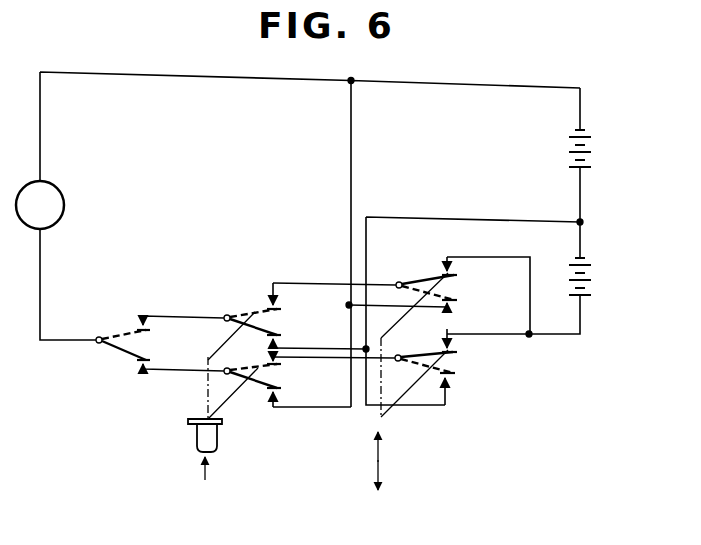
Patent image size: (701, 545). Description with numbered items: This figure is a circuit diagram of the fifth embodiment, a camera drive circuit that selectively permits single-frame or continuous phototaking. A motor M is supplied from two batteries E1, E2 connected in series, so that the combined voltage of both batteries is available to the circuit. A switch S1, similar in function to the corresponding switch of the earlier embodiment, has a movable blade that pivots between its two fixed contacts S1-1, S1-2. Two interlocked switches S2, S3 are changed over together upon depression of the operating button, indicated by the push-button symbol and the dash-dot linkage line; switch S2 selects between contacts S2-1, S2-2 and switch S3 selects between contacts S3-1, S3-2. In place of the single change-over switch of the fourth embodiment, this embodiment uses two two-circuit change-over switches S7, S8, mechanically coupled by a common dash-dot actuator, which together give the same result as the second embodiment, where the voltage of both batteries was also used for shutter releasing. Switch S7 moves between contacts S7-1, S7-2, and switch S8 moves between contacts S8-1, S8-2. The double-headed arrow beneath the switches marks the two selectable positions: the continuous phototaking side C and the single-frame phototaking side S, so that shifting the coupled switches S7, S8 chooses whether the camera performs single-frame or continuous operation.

The motor M is at (40, 205).
The battery E1 is at (595, 148).
The battery E2 is at (595, 276).
The switch S1 is at (115, 350).
The switch contact S1-1 is at (180, 330).
The switch contact S1-2 is at (180, 359).
The interlocked switch S2 is at (252, 386).
The switch contact S2-1 is at (309, 397).
The switch contact S2-2 is at (331, 370).
The interlocked switch S3 is at (257, 312).
The switch contact S3-1 is at (357, 297).
The switch contact S3-2 is at (316, 336).
The change-over switch S7 is at (428, 276).
The switch contact S7-1 is at (486, 295).
The switch contact S7-2 is at (479, 305).
The change-over switch S8 is at (423, 351).
The switch contact S8-1 is at (479, 350).
The switch contact S8-2 is at (478, 387).
The continuous phototaking side C is at (389, 443).
The single-frame phototaking side S is at (388, 479).